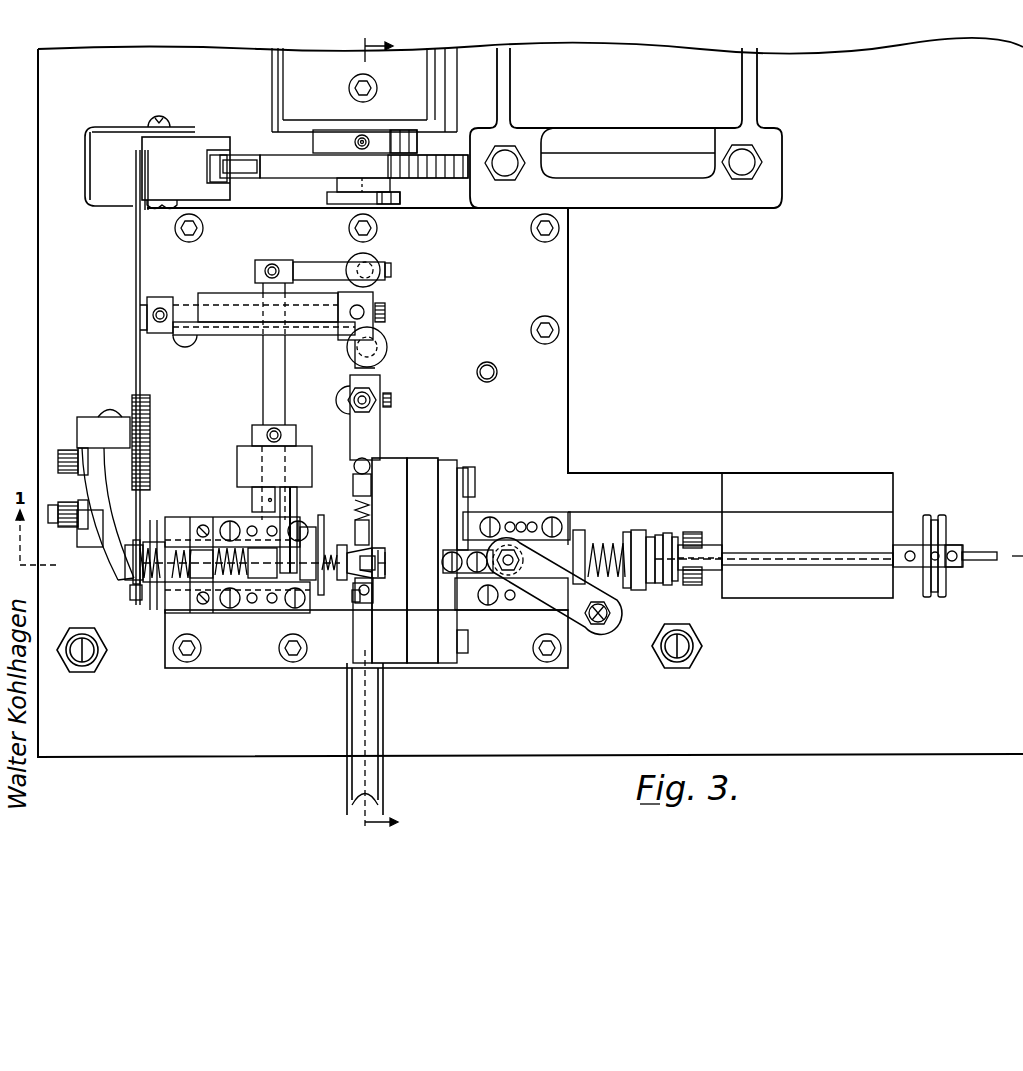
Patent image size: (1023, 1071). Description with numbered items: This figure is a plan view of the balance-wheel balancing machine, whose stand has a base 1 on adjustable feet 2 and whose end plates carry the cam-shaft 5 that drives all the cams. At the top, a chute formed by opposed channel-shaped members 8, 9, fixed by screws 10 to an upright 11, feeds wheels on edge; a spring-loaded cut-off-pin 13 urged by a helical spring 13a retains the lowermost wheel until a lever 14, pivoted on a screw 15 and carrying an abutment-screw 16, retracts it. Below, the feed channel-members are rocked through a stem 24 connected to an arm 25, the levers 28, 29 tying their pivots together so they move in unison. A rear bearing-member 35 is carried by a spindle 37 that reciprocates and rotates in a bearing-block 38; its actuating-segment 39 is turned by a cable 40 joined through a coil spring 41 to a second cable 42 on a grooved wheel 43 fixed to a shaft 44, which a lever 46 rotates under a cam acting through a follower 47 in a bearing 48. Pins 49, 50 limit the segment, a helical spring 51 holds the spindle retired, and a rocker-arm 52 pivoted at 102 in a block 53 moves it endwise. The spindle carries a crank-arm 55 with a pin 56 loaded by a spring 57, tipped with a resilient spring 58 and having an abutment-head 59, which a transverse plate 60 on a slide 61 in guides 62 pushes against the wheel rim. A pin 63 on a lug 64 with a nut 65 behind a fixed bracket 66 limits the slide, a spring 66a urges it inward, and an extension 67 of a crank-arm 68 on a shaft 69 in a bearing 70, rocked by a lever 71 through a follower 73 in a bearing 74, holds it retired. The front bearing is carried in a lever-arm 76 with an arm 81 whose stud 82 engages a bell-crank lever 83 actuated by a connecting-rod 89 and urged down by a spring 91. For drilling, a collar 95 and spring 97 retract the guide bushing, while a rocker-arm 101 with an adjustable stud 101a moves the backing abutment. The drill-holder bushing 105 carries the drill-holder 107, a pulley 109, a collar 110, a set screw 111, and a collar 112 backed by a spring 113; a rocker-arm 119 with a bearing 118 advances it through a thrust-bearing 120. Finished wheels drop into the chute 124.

The base 1 is at (845, 319).
The adjustable feet 2 is at (84, 678).
The cam-shaft 5 is at (392, 185).
The channel-shaped chute-member 8 is at (360, 552).
The channel-shaped chute-member 9 is at (368, 598).
The screws 10 is at (368, 547).
The upright 11 is at (438, 460).
The cut-off-pin 13 is at (422, 560).
The helical spring 13a is at (389, 560).
The lever 14 is at (372, 487).
The screw 15 is at (352, 478).
The abutment-screw 16 is at (380, 455).
The stem 24 is at (380, 395).
The arm 25 is at (372, 420).
The lever 28 is at (450, 655).
The lever 29 is at (460, 474).
The rear bearing-member 35 is at (370, 585).
The spindle 37 is at (137, 555).
The bearing-block 38 is at (180, 612).
The actuating-segment 39 is at (137, 603).
The cable 40 is at (137, 577).
The coil spring 41 is at (134, 396).
The cable 42 is at (142, 360).
The wheel 43 is at (145, 257).
The shaft 44 is at (183, 310).
The lever 46 is at (387, 350).
The follower 47 is at (362, 368).
The bearing 48 is at (383, 343).
The pin 49 is at (153, 540).
The pin 50 is at (150, 604).
The helical spring 51 is at (167, 575).
The rocker-arm 52 is at (97, 540).
The block 53 is at (92, 420).
The crank-arm 55 is at (370, 552).
The pin 56 is at (372, 572).
The spring 57 is at (378, 556).
The spring 58 is at (380, 566).
The abutment-head 59 is at (384, 556).
The transverse plate 60 is at (312, 548).
The slide 61 is at (293, 530).
The guides 62 is at (268, 613).
The pin 63 is at (232, 575).
The lug 64 is at (273, 550).
The nut 65 is at (190, 545).
The bracket 66 is at (207, 612).
The spring 66a is at (238, 585).
The extension 67 is at (292, 600).
The crank-arm 68 is at (263, 494).
The shaft 69 is at (287, 365).
The bearing 70 is at (248, 453).
The lever 71 is at (298, 270).
The follower 73 is at (354, 267).
The bearing 74 is at (371, 260).
The lever-arm 76 is at (376, 566).
The arm 81 is at (550, 600).
The stud 82 is at (598, 630).
The bell-crank lever 83 is at (579, 550).
The connecting-rod 89 is at (591, 628).
The spring 91 is at (518, 513).
The collar 95 is at (607, 545).
The spring 97 is at (571, 520).
The rocker-arm 101 is at (76, 546).
The adjustable stud 101a is at (58, 512).
The pivot 102 is at (103, 400).
The drill-holder bushing 105 is at (720, 578).
The drill-holder 107 is at (982, 552).
The pulley 109 is at (924, 597).
The collar 110 is at (956, 567).
The set screw 111 is at (910, 545).
The collar 112 is at (553, 277).
The spring 113 is at (640, 533).
The bearing 118 is at (700, 586).
The rocker-arm 119 is at (676, 584).
The thrust-bearing 120 is at (648, 585).
The chute 124 is at (350, 784).